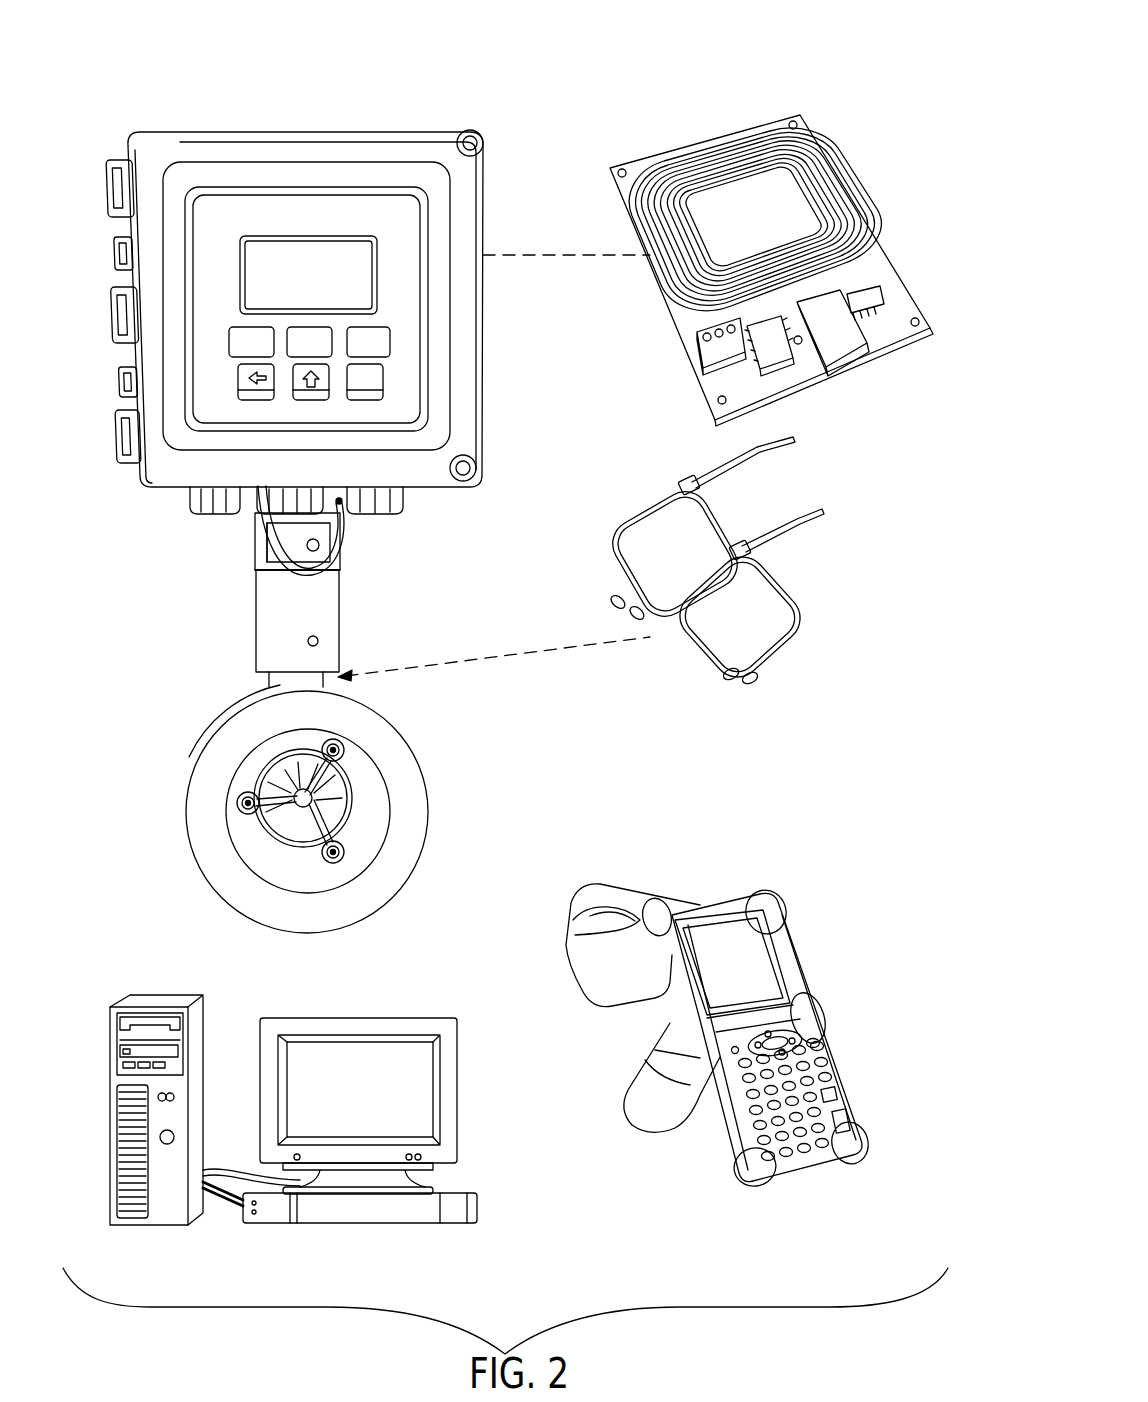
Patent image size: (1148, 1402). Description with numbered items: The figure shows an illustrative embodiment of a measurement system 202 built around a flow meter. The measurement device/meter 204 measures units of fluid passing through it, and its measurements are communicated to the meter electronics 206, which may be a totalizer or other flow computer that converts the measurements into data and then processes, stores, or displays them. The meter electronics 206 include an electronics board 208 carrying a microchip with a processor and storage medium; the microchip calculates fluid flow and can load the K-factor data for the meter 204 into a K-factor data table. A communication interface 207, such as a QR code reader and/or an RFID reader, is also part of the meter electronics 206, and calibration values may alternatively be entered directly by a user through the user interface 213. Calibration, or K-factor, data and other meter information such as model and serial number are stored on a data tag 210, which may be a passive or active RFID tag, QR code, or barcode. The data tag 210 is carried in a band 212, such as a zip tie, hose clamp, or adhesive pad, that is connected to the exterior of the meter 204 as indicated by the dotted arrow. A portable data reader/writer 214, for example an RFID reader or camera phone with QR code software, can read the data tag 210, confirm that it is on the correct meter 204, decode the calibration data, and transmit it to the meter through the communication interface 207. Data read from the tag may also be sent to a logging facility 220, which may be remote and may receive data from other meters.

The measurement system 202 is at (698, 53).
The measurement device/meter 204 is at (192, 772).
The meter electronics 206 is at (271, 341).
The communication interface 207 is at (848, 383).
The electronics board 208 is at (843, 187).
The data tag 210 is at (615, 606).
The band 212 is at (778, 581).
The user interface 213 is at (230, 390).
The portable data reader/writer 214 is at (838, 1073).
The logging facility 220 is at (474, 1237).